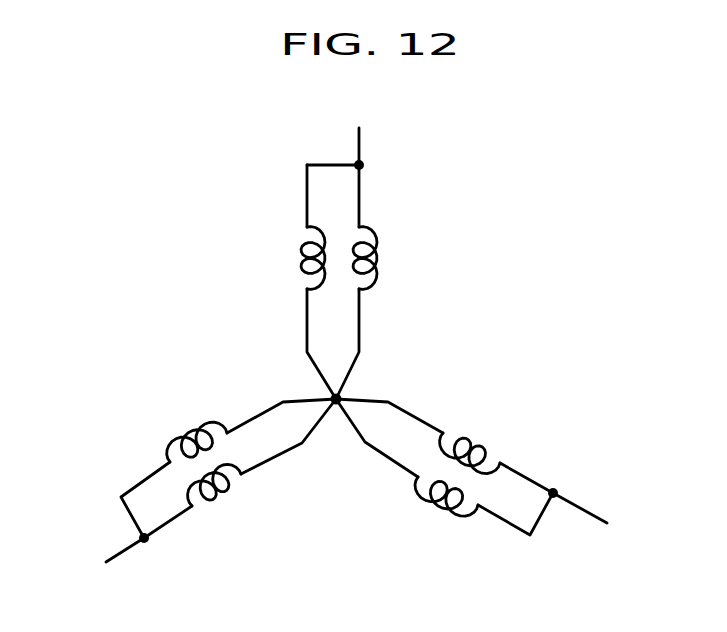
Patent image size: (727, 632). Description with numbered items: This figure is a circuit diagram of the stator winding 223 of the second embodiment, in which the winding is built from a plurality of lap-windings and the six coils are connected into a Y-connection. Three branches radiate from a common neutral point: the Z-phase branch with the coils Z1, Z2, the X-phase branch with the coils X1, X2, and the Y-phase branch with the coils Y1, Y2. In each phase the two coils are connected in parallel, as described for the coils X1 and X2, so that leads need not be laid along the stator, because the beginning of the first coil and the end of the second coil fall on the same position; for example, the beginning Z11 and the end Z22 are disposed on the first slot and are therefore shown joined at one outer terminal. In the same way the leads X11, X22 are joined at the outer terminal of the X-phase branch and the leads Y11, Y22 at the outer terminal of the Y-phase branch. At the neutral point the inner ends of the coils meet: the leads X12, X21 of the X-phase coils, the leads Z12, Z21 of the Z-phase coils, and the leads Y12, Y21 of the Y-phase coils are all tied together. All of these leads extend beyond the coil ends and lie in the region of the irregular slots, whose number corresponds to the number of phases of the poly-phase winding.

The stator winding 223 is at (509, 249).
The coil X1 is at (230, 478).
The coil X2 is at (190, 437).
The coil Y1 is at (485, 446).
The coil Y2 is at (437, 502).
The coil Z1 is at (378, 260).
The coil Z2 is at (304, 246).
The lead X11 is at (83, 522).
The lead X22 is at (136, 535).
The lead X12 is at (329, 419).
The lead X21 is at (329, 419).
The lead Y11 is at (615, 485).
The lead Y22 is at (556, 491).
The lead Y12 is at (329, 419).
The lead Y21 is at (381, 378).
The lead Z11 is at (402, 155).
The lead Z22 is at (363, 165).
The lead Z12 is at (329, 419).
The lead Z21 is at (329, 419).